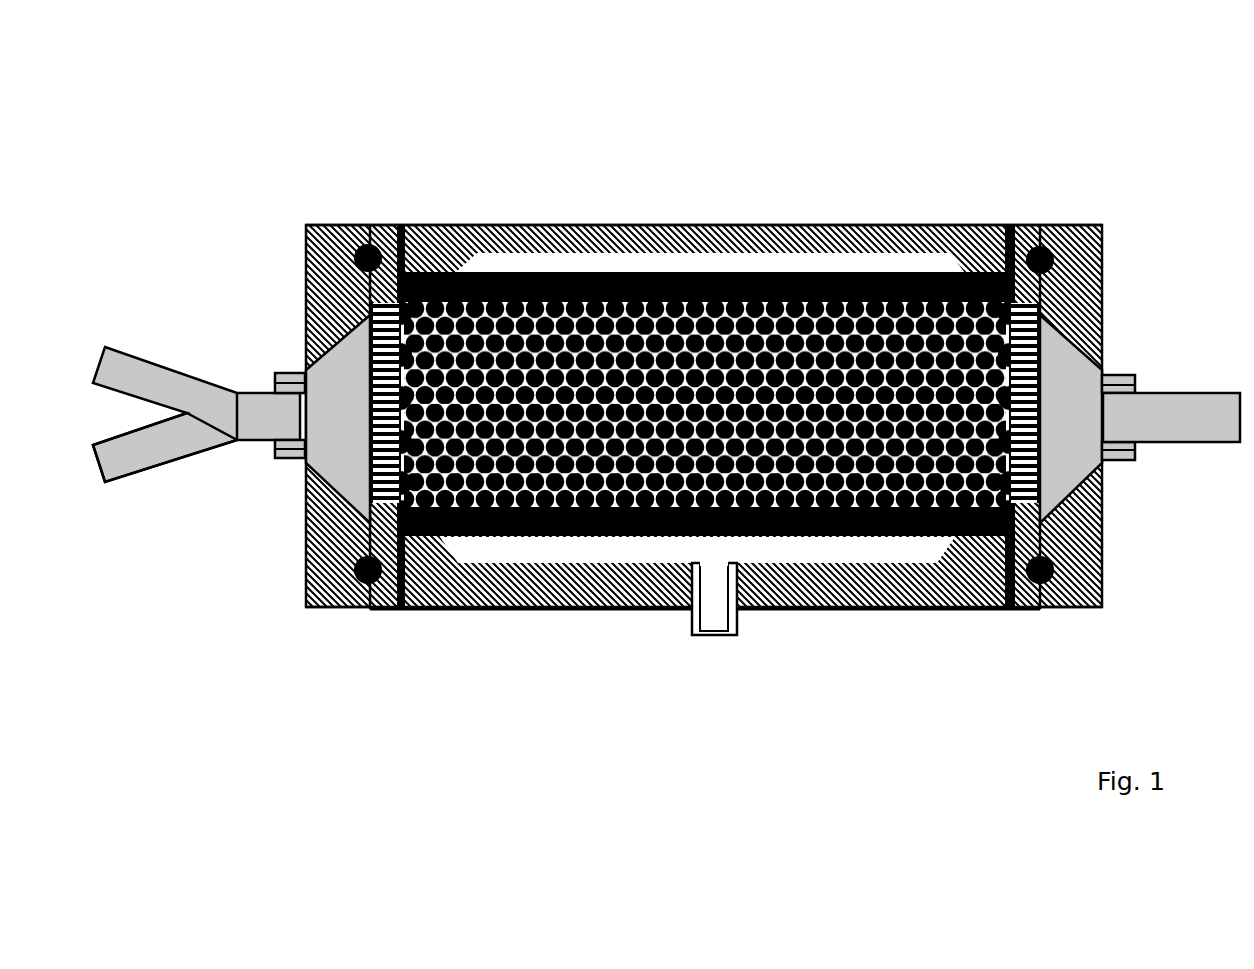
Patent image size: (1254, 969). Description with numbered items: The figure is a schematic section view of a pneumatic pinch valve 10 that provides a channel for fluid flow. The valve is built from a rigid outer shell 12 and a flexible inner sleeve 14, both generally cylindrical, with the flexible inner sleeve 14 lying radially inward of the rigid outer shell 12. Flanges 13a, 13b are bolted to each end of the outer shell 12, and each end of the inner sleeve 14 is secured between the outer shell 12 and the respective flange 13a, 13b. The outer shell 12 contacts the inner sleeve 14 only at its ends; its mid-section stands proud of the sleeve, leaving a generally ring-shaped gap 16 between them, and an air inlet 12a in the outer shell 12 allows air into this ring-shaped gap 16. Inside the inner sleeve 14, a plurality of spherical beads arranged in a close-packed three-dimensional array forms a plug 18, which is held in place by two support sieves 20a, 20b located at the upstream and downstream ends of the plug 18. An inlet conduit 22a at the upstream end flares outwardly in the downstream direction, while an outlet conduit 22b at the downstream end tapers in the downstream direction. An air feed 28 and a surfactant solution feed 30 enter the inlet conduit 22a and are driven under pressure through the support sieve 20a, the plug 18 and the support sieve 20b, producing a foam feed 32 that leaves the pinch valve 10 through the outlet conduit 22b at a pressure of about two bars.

The pneumatic pinch valve 10 is at (382, 696).
The rigid outer shell 12 is at (570, 596).
The air inlet 12a is at (714, 618).
The flange 13a is at (392, 232).
The flange 13b is at (1033, 240).
The flexible inner sleeve 14 is at (613, 272).
The ring-shaped gap 16 is at (859, 559).
The plug 18 is at (898, 420).
The support sieve 20a is at (382, 398).
The support sieve 20b is at (1033, 388).
The inlet conduit 22a is at (336, 484).
The outlet conduit 22b is at (1085, 480).
The air feed 28 is at (144, 462).
The surfactant solution feed 30 is at (142, 370).
The foam feed 32 is at (1190, 398).